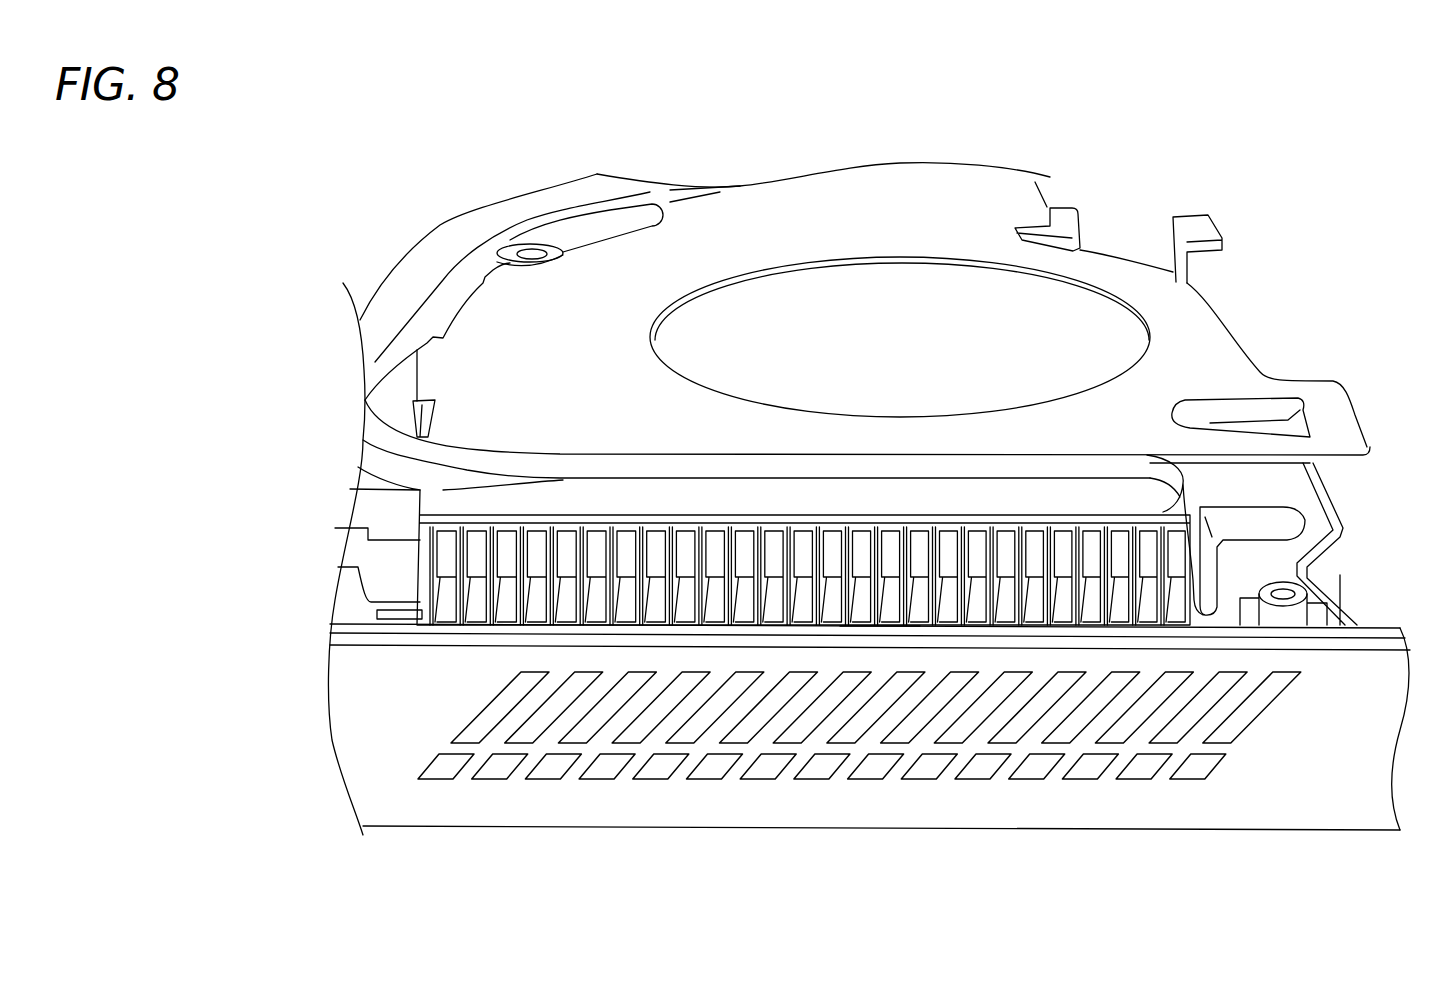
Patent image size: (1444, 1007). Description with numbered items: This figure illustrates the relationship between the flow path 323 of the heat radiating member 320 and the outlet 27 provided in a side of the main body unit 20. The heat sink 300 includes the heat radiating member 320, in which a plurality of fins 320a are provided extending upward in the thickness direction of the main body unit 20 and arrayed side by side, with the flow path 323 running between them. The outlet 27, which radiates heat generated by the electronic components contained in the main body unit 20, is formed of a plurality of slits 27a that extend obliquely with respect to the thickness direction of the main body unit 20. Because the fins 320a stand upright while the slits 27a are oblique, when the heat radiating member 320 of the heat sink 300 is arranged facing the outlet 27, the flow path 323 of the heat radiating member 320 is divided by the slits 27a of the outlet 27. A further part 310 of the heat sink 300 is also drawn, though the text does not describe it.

The main body unit 20 is at (367, 690).
The outlet 27 is at (859, 783).
The slit 27a is at (643, 724).
The heat sink 300 is at (1252, 321).
The fan 310 is at (1027, 208).
The heat radiating member 320 is at (1183, 510).
The fin 320a is at (1073, 620).
The flow path 323 is at (878, 625).